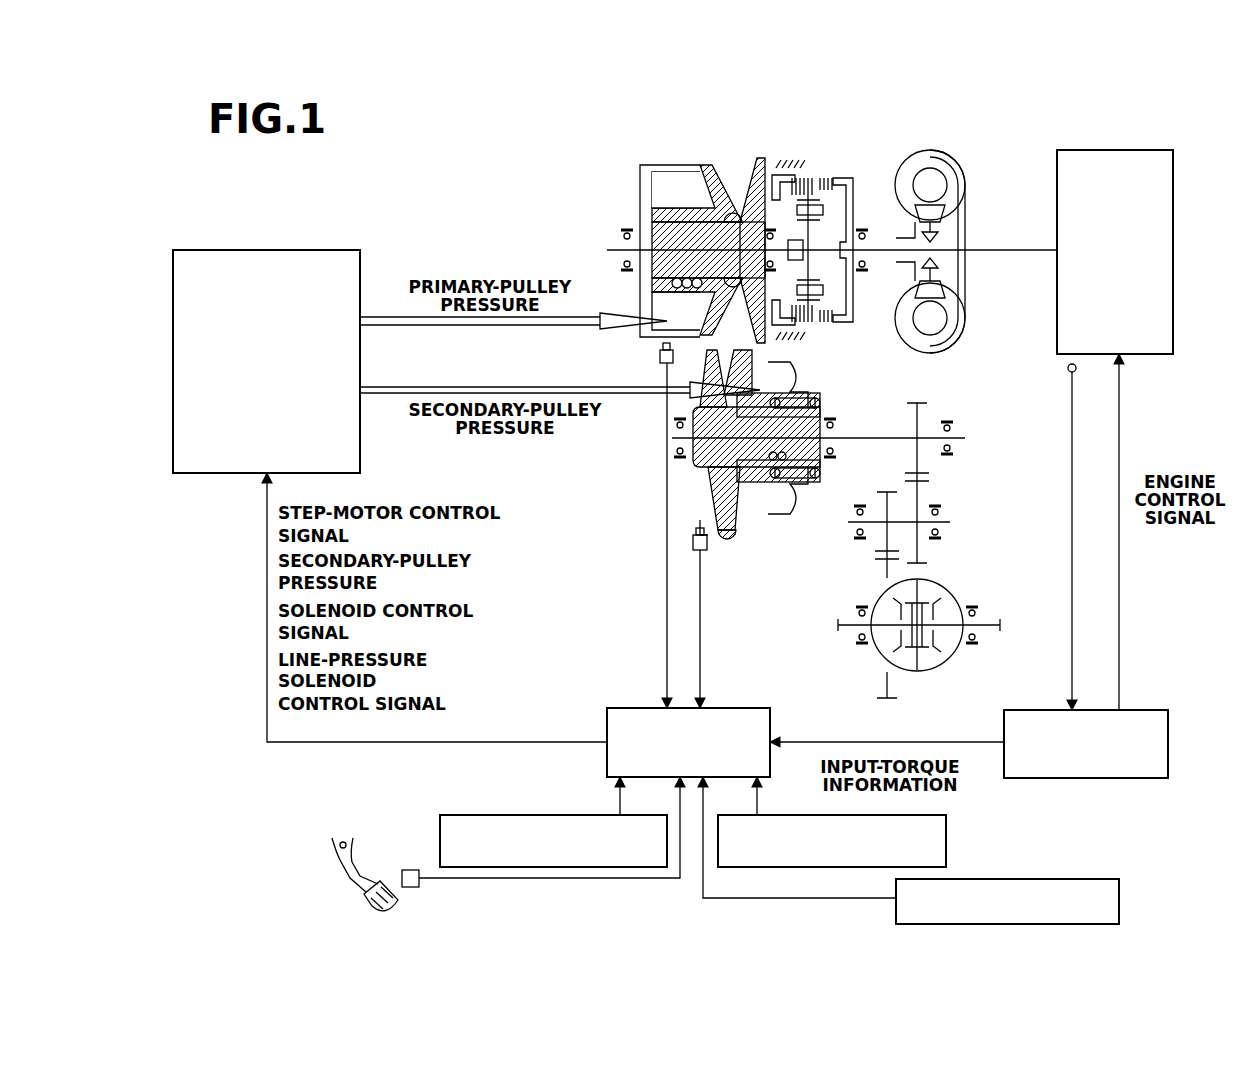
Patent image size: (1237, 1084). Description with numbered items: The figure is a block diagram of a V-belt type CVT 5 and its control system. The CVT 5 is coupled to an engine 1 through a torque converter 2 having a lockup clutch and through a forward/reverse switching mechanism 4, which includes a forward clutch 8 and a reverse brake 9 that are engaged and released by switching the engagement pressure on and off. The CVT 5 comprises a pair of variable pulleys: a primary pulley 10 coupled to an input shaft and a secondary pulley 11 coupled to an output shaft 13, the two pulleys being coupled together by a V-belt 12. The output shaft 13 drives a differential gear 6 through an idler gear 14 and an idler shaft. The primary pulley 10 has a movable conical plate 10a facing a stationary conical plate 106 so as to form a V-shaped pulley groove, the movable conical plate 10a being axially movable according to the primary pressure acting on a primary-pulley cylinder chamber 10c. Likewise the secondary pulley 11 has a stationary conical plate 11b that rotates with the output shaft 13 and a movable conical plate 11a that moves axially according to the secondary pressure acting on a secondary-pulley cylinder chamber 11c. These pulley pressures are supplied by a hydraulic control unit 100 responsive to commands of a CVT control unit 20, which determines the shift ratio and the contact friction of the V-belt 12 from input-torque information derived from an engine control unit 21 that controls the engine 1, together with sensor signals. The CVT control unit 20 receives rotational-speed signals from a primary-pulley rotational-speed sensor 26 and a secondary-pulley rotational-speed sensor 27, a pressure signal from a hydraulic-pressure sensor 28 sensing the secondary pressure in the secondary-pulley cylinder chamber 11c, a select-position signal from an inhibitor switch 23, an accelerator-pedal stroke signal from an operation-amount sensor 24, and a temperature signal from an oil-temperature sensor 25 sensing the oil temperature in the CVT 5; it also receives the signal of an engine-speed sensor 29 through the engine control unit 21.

The engine 1 is at (1173, 255).
The torque converter 2 is at (931, 146).
The forward/reverse switching mechanism 4 is at (827, 215).
The V-belt type CVT 5 is at (678, 152).
The differential gear 6 is at (952, 584).
The forward clutch 8 is at (830, 178).
The reverse brake 9 is at (797, 180).
The primary pulley 10 is at (757, 142).
The movable conical plate 10a is at (702, 162).
The primary-pulley cylinder chamber 10c is at (657, 190).
The fixed sheave of primary pulley 106 is at (760, 160).
The secondary pulley 11 is at (720, 467).
The movable conical plate 11a is at (740, 523).
The stationary conical plate 11b is at (707, 505).
The secondary-pulley cylinder chamber 11c is at (840, 513).
The V-belt 12 is at (733, 210).
The output shaft 13 is at (865, 437).
The idler gear 14 is at (888, 498).
The CVT control unit 20 is at (607, 716).
The engine control unit 21 is at (1150, 710).
The inhibitor switch 23 is at (1119, 898).
The operation-amount sensor 24 is at (410, 870).
The oil-temperature sensor 25 is at (946, 840).
The primary-pulley rotational-speed sensor 26 is at (660, 356).
The secondary-pulley rotational-speed sensor 27 is at (712, 550).
The hydraulic-pressure sensor 28 is at (477, 815).
The engine-speed sensor 29 is at (1068, 368).
The hydraulic control unit 100 is at (267, 250).